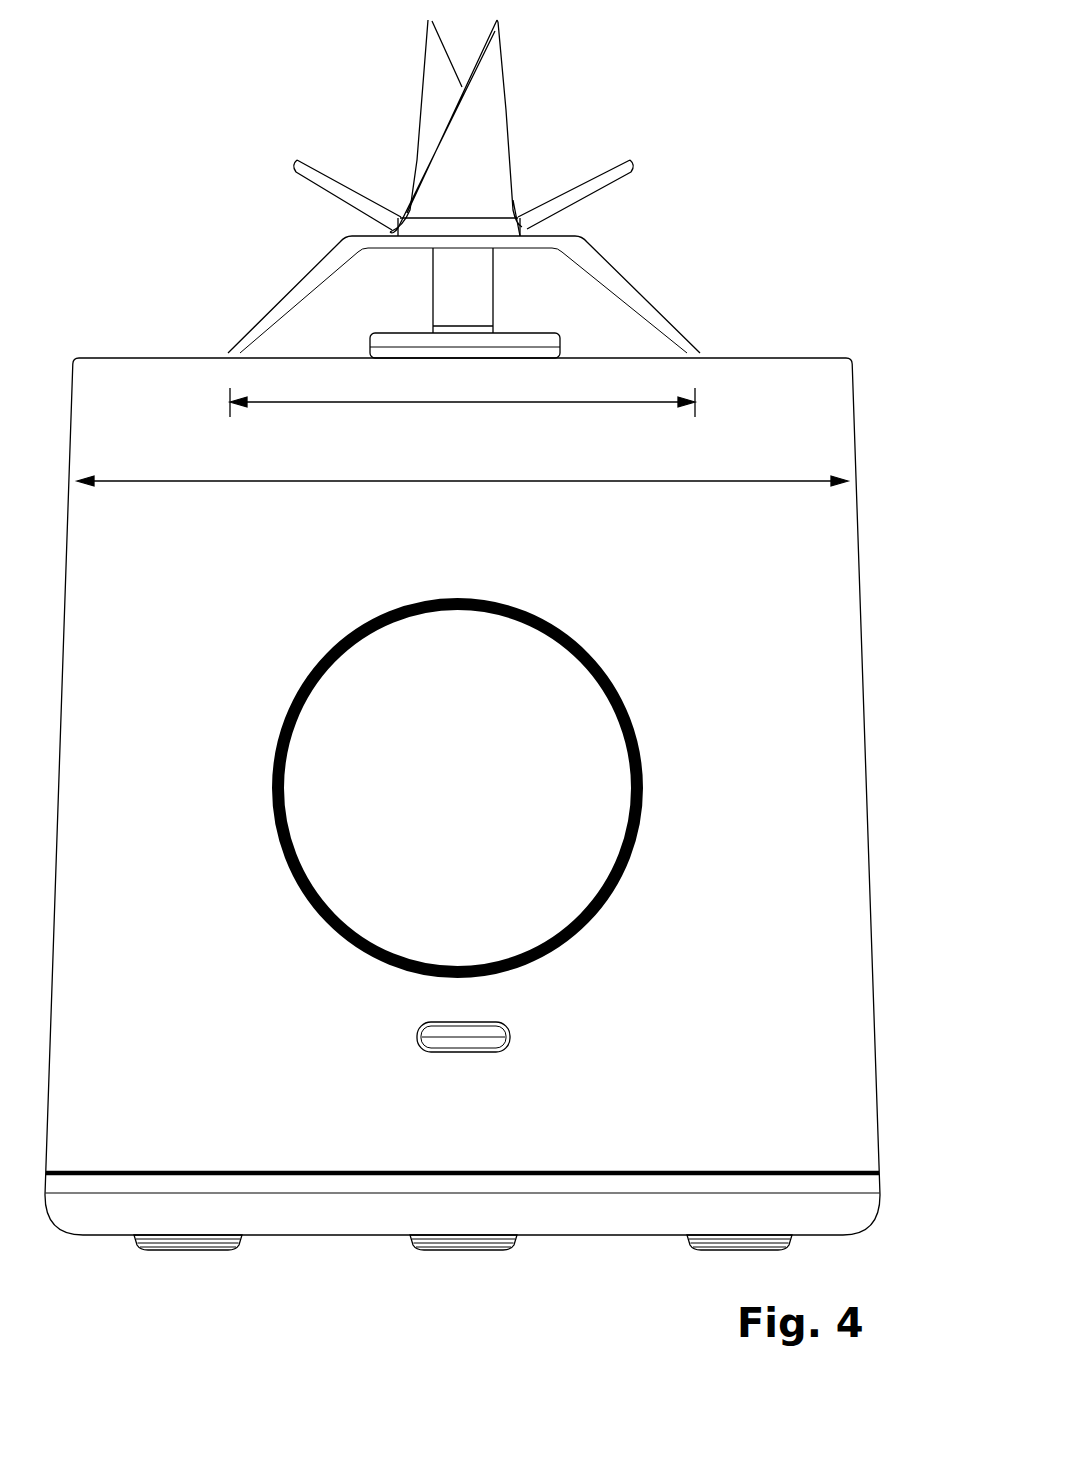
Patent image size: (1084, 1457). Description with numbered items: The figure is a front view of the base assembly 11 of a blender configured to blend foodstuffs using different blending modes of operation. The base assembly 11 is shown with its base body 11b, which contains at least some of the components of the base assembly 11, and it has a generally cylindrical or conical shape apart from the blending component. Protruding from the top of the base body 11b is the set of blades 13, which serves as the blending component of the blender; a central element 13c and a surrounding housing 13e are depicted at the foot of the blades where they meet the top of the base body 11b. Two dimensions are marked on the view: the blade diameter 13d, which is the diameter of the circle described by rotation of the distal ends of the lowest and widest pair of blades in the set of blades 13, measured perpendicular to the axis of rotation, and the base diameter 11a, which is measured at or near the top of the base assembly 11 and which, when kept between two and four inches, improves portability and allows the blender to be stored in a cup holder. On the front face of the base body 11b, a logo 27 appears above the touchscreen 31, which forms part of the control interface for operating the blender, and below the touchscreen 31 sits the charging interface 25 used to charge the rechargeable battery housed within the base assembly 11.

The base assembly 11 is at (815, 68).
The base diameter 11a is at (462, 467).
The base body 11b is at (848, 356).
The set of blades 13 is at (551, 128).
The blade shaft 13c is at (463, 290).
The blade diameter 13d is at (462, 392).
The blade housing 13e is at (464, 297).
The charging interface 25 is at (553, 1052).
The logo 27 is at (476, 541).
The touchscreen 31 is at (527, 788).